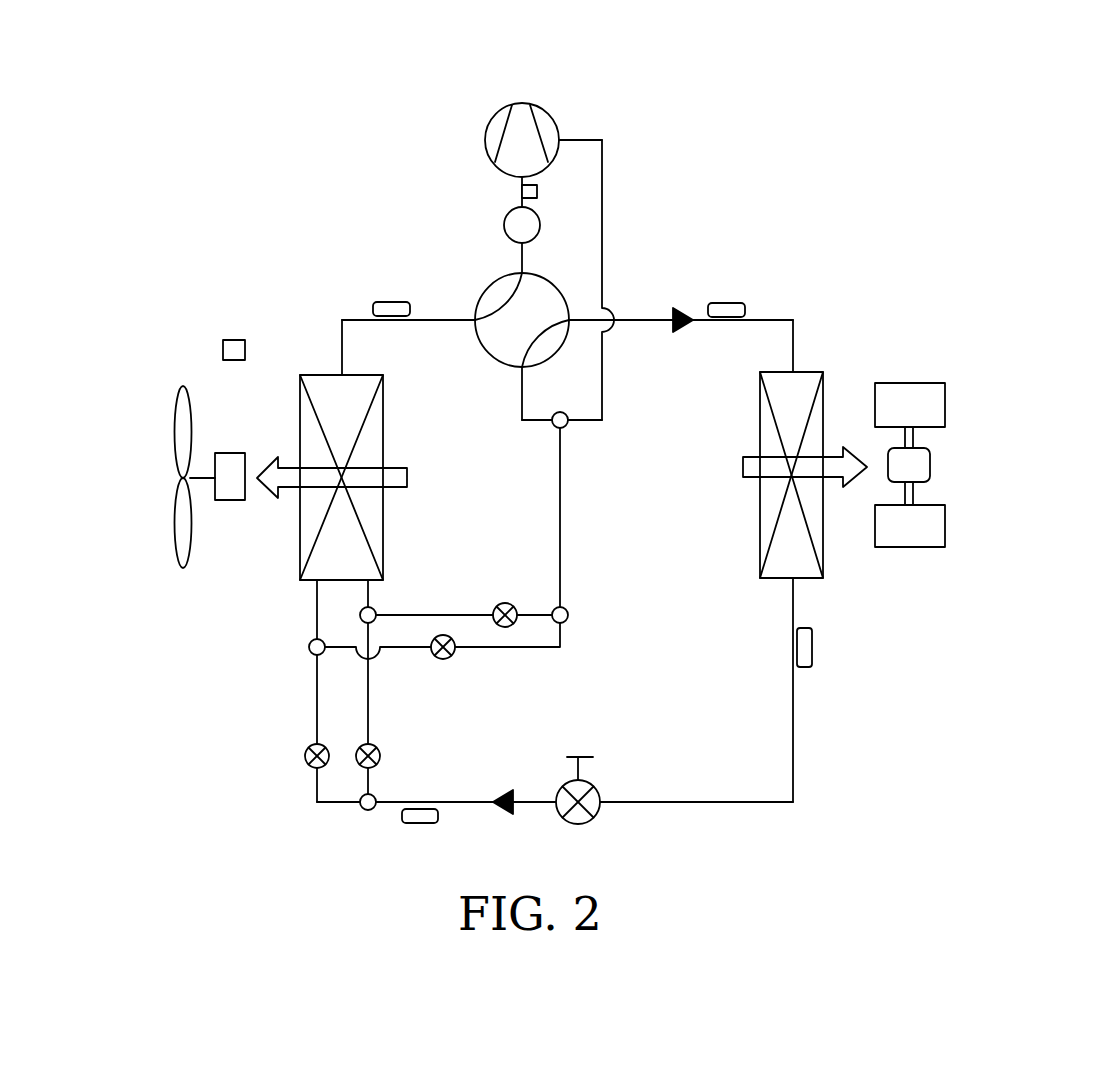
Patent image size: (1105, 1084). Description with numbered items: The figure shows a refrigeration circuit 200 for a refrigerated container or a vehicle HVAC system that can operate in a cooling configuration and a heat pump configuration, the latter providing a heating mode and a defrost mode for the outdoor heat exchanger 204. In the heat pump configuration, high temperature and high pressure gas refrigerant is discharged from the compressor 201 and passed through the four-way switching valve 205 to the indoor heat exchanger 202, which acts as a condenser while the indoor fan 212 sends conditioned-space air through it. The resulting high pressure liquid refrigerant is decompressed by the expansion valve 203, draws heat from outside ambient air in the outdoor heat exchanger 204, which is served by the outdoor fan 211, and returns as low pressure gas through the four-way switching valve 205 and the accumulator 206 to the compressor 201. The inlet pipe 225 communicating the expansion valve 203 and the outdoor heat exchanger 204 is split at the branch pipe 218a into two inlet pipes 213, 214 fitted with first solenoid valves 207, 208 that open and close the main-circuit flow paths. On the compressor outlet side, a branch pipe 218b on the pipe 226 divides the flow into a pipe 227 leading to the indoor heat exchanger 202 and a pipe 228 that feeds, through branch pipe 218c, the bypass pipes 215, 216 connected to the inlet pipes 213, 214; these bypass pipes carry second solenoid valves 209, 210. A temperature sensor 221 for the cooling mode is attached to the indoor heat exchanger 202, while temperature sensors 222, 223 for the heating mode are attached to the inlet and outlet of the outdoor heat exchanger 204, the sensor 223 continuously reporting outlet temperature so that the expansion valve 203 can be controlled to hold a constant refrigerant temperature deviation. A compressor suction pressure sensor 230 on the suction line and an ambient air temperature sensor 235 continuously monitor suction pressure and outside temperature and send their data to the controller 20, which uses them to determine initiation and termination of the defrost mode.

The refrigeration circuit 200 is at (1020, 128).
The compressor 201 is at (521, 104).
The indoor heat exchanger 202 is at (800, 372).
The expansion valve 203 is at (586, 822).
The outdoor heat exchanger 204 is at (358, 374).
The four-way switching valve 205 is at (494, 286).
The accumulator 206 is at (503, 225).
The first solenoid valve 207 is at (304, 756).
The first solenoid valve 208 is at (381, 756).
The second solenoid valve 209 is at (448, 660).
The second solenoid valve 210 is at (506, 602).
The outdoor fan 211 is at (182, 386).
The indoor fan 212 is at (920, 382).
The inlet pipe 213 is at (316, 712).
The inlet pipe 214 is at (369, 712).
The bypass pipe 215 is at (546, 649).
The bypass pipe 216 is at (440, 613).
The branch pipe 218a is at (368, 812).
The branch pipe 218b is at (560, 411).
The branch pipe 218c is at (570, 615).
The temperature sensor 221 is at (727, 302).
The temperature sensor 222 is at (420, 825).
The temperature sensor 223 is at (392, 301).
The inlet pipe 225 is at (534, 808).
The pipe 226 is at (604, 382).
The pipe 227 is at (636, 316).
The pipe 228 is at (563, 523).
The compressor suction pressure sensor 230 is at (540, 192).
The ambient air temperature sensor 235 is at (234, 339).
The controller 20 is at (813, 648).